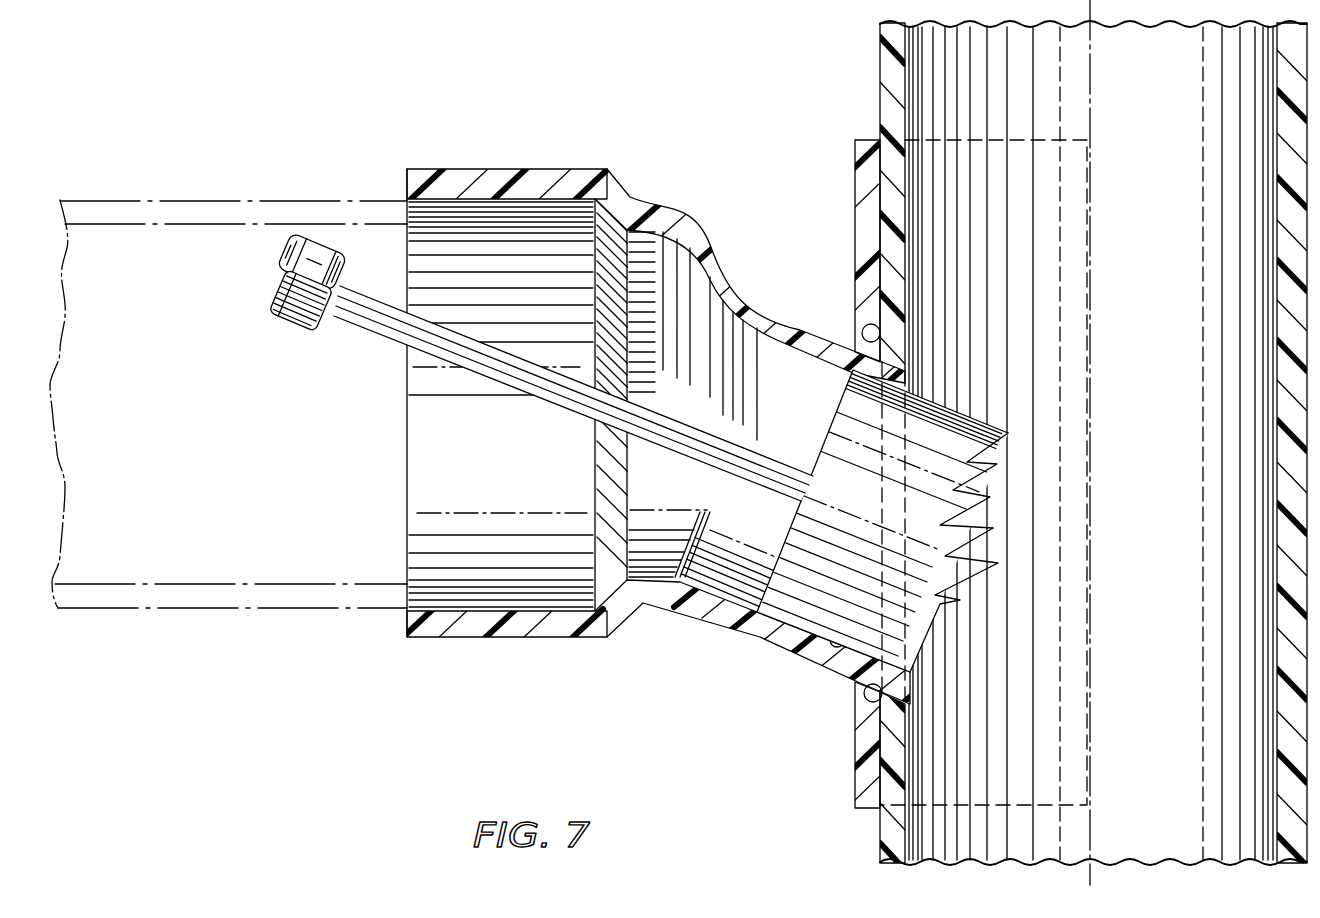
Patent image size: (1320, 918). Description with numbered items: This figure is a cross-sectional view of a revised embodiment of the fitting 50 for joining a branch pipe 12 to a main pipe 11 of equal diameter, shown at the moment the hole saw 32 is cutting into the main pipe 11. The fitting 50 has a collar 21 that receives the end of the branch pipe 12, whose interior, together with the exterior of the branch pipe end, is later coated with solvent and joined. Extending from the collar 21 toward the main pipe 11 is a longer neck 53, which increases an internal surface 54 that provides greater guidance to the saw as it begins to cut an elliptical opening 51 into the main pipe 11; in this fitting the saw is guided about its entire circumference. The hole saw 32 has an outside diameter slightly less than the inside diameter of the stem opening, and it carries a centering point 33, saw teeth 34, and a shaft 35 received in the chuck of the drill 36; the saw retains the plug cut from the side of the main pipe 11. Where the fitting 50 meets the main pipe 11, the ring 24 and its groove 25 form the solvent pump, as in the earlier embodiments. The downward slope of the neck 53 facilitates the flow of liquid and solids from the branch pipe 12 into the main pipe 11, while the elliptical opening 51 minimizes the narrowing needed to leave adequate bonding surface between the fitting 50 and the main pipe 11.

The main pipe 11 is at (893, 80).
The branch pipe 12 is at (262, 600).
The collar 21 is at (508, 630).
The ring 24 is at (882, 692).
The groove 25 is at (870, 322).
The hole saw 32 is at (972, 408).
The centering point 33 is at (983, 568).
The saw teeth 34 is at (945, 523).
The shaft 35 is at (552, 395).
The drill 36 is at (292, 336).
The fitting 50 is at (736, 701).
The elliptical opening 51 is at (898, 465).
The neck 53 is at (738, 623).
The internal surface 54 is at (832, 647).